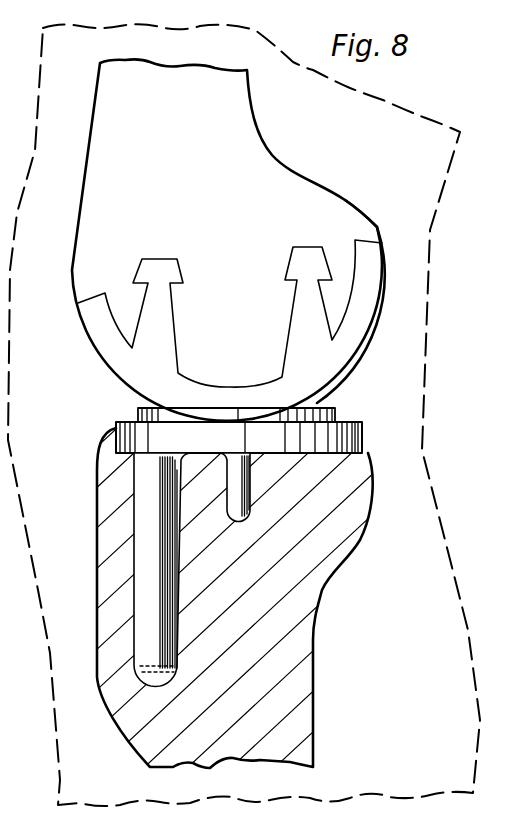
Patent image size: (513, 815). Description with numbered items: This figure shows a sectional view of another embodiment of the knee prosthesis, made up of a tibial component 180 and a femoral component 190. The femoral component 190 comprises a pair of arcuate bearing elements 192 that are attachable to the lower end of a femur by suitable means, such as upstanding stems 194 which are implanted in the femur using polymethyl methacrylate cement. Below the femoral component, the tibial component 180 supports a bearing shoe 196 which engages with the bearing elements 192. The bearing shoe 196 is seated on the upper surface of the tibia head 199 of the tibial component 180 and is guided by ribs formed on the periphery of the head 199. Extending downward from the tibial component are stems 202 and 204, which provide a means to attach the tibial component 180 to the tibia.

The tibial component 180 is at (256, 600).
The femoral component 190 is at (230, 240).
The arcuate bearing elements 192 is at (368, 342).
The upstanding stems 194 is at (155, 321).
The bearing shoe 196 is at (320, 412).
The tibia head 199 is at (368, 457).
The stem 202 is at (157, 623).
The stem 204 is at (240, 503).